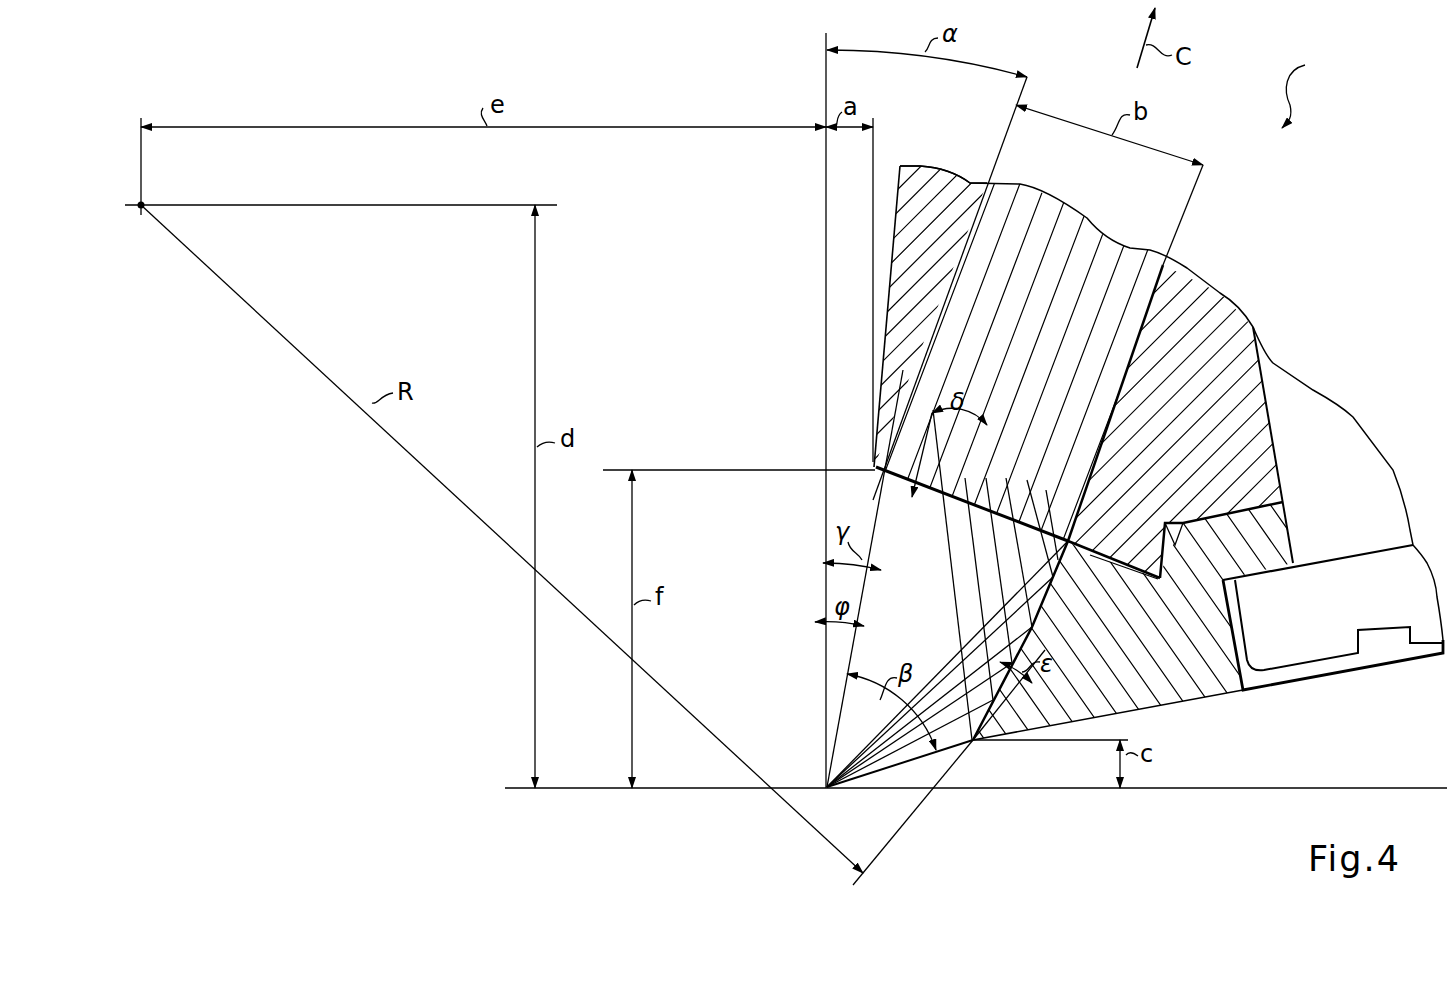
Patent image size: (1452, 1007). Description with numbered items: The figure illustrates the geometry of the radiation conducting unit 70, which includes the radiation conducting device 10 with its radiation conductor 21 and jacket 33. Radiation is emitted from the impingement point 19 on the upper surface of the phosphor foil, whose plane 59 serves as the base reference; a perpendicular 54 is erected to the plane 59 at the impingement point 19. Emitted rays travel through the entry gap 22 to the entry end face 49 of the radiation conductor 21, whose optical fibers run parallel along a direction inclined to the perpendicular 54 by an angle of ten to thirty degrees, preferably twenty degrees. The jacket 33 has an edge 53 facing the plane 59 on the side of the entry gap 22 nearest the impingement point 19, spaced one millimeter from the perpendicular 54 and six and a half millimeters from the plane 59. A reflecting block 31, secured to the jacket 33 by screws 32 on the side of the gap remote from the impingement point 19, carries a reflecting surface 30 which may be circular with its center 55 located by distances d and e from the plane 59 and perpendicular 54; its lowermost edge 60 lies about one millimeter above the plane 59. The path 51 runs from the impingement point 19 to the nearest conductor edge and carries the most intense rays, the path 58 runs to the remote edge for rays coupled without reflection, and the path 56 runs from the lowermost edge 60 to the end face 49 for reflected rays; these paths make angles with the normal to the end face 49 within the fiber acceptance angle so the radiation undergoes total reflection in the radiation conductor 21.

The radiation conducting device 10 is at (958, 175).
The impingement point 19 is at (826, 785).
The radiation conductor 21 is at (1118, 245).
The entry gap 22 is at (890, 588).
The reflecting surface 30 is at (997, 705).
The reflecting block 31 is at (1203, 670).
The screws 32 is at (1308, 655).
The jacket 33 is at (1218, 307).
The entry end face 49 is at (913, 495).
The path 51 is at (826, 700).
The edge 53 is at (870, 462).
The perpendicular 54 is at (826, 258).
The center 55 is at (141, 208).
The path 56 is at (957, 588).
The path 58 is at (960, 637).
The plane 59 is at (1355, 786).
The lowermost edge 60 is at (975, 742).
The radiation conducting unit 70 is at (1310, 89).